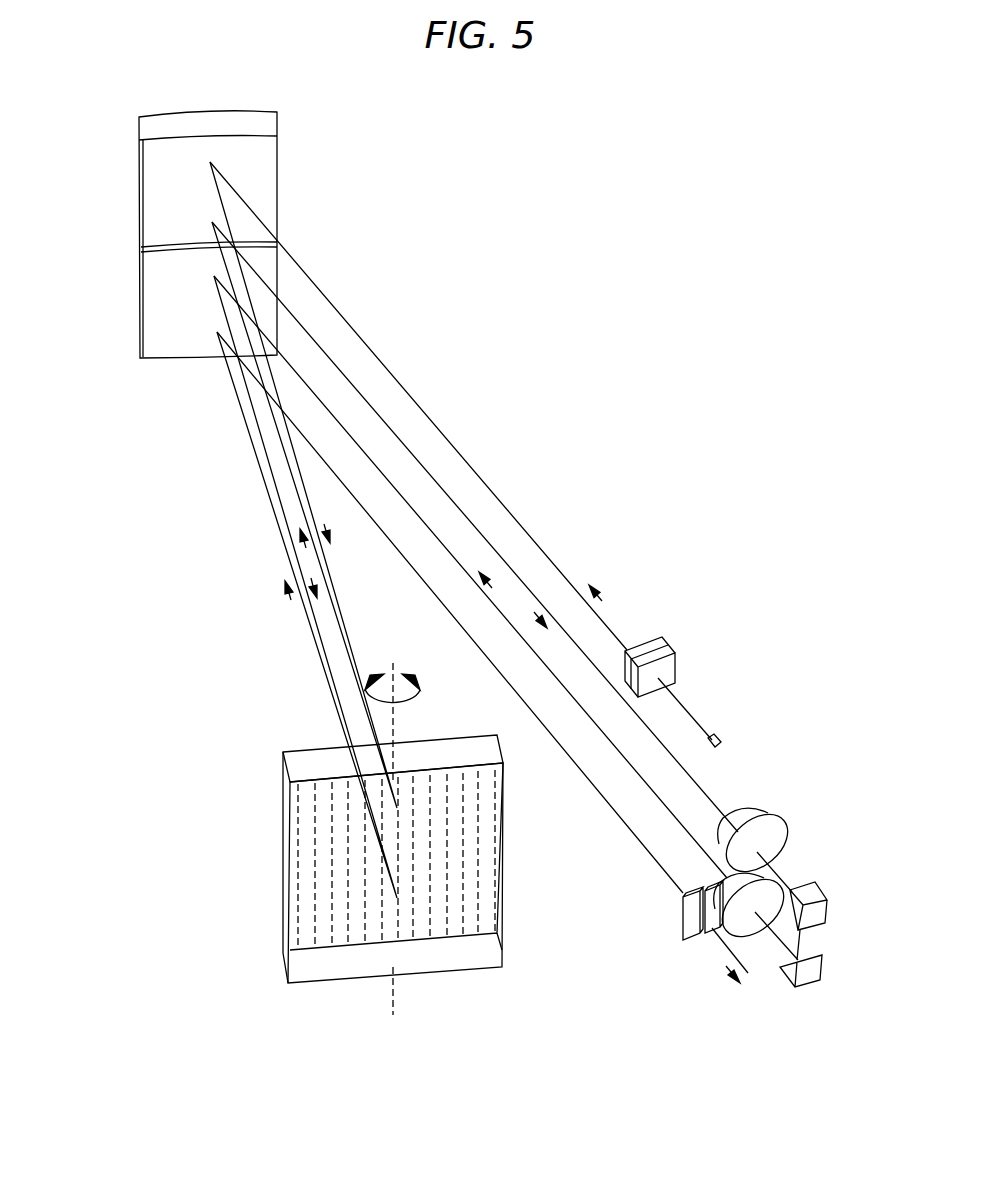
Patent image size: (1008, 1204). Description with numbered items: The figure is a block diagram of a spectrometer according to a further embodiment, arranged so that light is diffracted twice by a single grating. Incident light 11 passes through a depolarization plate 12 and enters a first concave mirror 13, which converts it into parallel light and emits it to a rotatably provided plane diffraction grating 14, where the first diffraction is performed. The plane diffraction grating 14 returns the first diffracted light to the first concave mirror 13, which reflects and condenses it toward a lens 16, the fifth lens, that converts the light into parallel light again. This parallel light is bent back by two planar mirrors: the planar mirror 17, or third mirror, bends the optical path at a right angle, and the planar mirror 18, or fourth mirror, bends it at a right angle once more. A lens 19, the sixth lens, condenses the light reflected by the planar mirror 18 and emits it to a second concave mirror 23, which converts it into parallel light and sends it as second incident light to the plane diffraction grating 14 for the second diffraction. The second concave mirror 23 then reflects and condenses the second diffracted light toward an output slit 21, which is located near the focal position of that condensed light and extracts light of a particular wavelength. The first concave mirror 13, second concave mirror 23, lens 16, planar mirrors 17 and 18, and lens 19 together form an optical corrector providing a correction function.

The incident light 11 is at (718, 737).
The depolarization plate 12 is at (663, 657).
The first concave mirror 13 is at (160, 120).
The plane diffraction grating 14 is at (285, 765).
The lens (fifth lens) 16 is at (776, 838).
The planar mirror (third mirror) 17 is at (812, 890).
The planar mirror (fourth mirror) 18 is at (822, 966).
The lens (sixth lens) 19 is at (752, 928).
The output slit 21 is at (690, 906).
The second concave mirror 23 is at (157, 322).